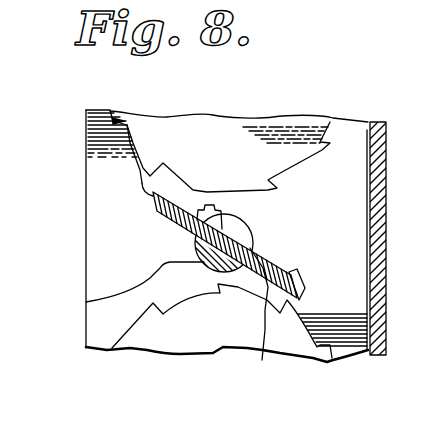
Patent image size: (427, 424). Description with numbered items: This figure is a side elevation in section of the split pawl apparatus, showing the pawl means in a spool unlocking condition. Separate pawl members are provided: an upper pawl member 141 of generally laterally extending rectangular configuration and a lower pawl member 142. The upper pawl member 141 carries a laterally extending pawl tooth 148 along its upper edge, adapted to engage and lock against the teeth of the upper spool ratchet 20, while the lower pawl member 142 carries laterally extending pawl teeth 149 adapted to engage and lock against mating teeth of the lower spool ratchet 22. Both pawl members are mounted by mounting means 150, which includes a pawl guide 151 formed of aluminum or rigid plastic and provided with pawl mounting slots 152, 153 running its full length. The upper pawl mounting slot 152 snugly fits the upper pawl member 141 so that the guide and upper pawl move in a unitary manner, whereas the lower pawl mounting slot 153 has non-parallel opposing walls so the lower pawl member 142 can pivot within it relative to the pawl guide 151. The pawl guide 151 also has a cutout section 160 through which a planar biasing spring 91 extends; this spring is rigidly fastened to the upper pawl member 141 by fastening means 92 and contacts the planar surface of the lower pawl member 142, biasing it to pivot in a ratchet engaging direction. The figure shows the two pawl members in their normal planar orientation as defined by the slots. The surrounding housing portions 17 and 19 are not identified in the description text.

The side wall 17 is at (98, 128).
The end wall 19 is at (383, 133).
The upper spool ratchet 20 is at (265, 128).
The lower spool ratchet 22 is at (219, 350).
The planar biasing spring 91 is at (251, 240).
The fastening means 92 is at (212, 206).
The upper pawl member 141 is at (86, 207).
The lower pawl member 142 is at (250, 316).
The pawl tooth 148 is at (142, 181).
The pawl teeth 149 is at (301, 291).
The mounting means 150 is at (132, 199).
The pawl guide 151 is at (86, 302).
The upper pawl mounting slot 152 is at (200, 231).
The lower pawl mounting slot 153 is at (247, 270).
The cutout section 160 is at (241, 226).